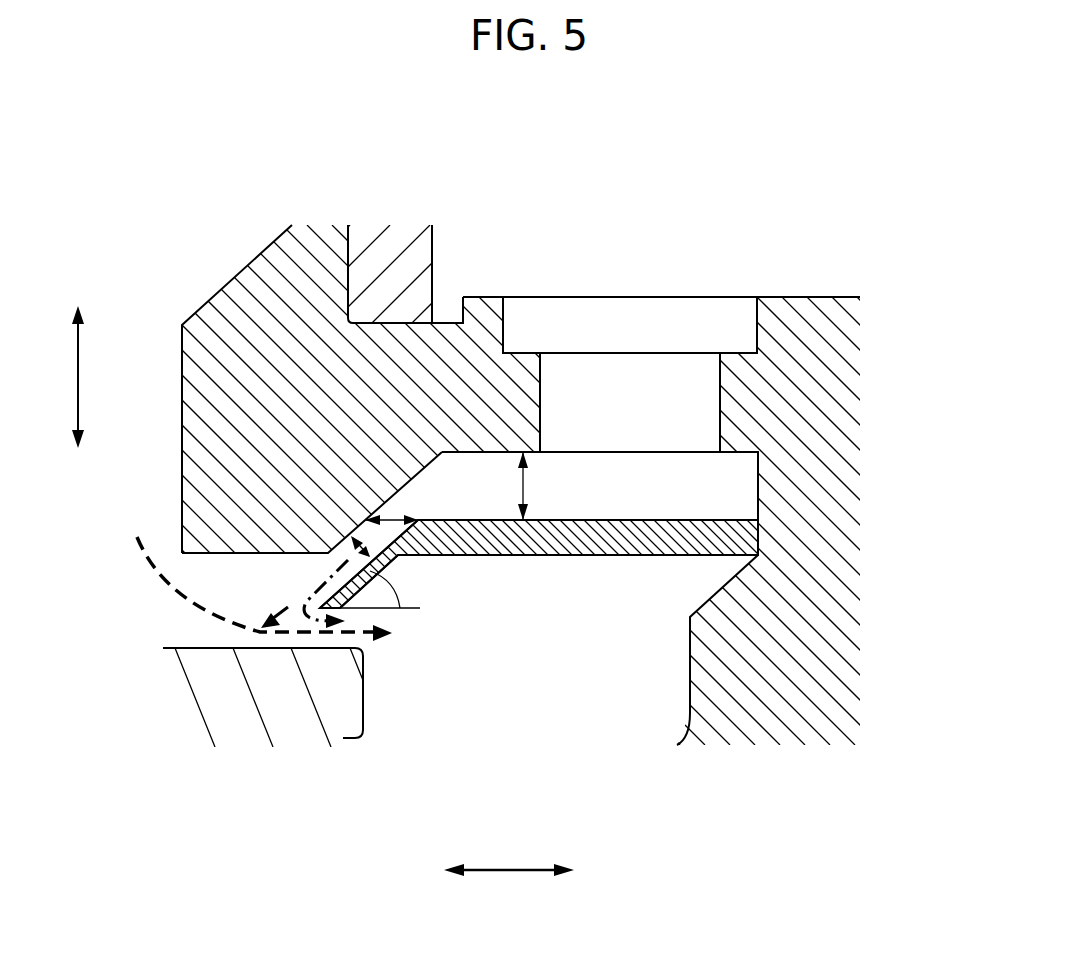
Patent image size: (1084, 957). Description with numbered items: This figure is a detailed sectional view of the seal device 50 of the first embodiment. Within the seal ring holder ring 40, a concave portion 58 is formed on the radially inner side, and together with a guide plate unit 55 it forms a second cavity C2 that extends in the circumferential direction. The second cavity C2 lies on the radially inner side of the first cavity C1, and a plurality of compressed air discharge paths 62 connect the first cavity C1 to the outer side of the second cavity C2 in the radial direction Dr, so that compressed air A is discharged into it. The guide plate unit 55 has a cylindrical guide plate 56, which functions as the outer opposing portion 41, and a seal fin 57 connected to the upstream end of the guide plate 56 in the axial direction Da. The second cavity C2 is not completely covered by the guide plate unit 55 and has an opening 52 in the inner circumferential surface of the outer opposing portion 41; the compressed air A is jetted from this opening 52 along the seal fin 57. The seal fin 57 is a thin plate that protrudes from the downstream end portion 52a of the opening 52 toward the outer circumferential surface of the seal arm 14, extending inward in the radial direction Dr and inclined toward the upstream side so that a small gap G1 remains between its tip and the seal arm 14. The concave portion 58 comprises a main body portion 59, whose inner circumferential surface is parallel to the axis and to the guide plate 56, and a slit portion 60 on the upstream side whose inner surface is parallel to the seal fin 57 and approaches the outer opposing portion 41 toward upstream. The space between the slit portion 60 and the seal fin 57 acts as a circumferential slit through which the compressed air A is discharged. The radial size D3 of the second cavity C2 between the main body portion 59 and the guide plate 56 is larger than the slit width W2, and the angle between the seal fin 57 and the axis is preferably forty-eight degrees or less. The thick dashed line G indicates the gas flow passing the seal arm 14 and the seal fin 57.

The seal arm 14 is at (252, 707).
The seal ring holder ring 40 is at (815, 637).
The outer opposing portion 41 is at (188, 540).
The seal device 50 is at (233, 732).
The opening 52 is at (536, 652).
The downstream end portion 52a is at (402, 546).
The guide plate unit 55 is at (625, 562).
The guide plate 56 is at (538, 547).
The seal fin 57 is at (370, 557).
The concave portion 58 is at (381, 302).
The main body portion 59 is at (452, 473).
The slit portion 60 is at (410, 488).
The compressed air discharge path 62 is at (540, 388).
The first cavity C1 is at (780, 254).
The second cavity C2 is at (640, 478).
The width of the slit W2 is at (366, 519).
The size of the second cavity in the radial direction D3 is at (540, 486).
The compressed air A is at (290, 608).
The gas flow G is at (172, 588).
The small gap G1 is at (327, 644).
The radial direction Dr is at (64, 377).
The axial direction Da is at (511, 884).